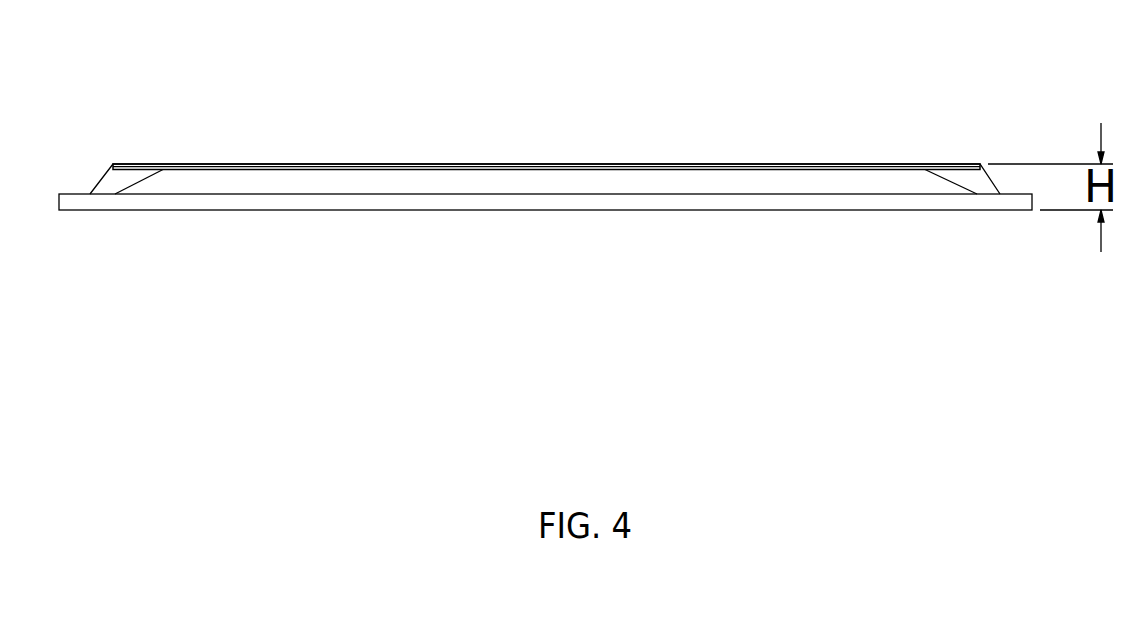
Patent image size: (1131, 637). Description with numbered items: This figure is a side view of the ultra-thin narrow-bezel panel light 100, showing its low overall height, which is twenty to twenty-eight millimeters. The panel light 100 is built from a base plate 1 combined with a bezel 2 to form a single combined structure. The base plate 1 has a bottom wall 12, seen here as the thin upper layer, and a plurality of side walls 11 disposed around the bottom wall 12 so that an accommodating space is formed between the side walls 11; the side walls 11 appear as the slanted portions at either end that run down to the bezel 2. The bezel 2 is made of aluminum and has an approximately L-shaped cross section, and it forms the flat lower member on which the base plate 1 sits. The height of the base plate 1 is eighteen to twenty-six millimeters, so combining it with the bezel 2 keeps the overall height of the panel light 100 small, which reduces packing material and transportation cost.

The ultra-thin narrow-bezel panel light 100 is at (274, 143).
The base plate 1 is at (458, 172).
The bottom wall 12 is at (582, 163).
The side walls 11 is at (901, 183).
The bezel 2 is at (973, 203).